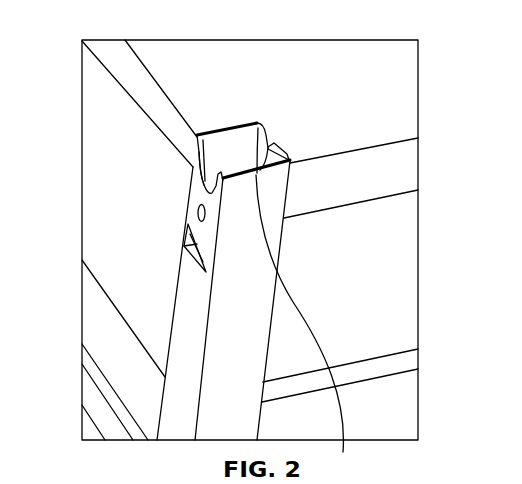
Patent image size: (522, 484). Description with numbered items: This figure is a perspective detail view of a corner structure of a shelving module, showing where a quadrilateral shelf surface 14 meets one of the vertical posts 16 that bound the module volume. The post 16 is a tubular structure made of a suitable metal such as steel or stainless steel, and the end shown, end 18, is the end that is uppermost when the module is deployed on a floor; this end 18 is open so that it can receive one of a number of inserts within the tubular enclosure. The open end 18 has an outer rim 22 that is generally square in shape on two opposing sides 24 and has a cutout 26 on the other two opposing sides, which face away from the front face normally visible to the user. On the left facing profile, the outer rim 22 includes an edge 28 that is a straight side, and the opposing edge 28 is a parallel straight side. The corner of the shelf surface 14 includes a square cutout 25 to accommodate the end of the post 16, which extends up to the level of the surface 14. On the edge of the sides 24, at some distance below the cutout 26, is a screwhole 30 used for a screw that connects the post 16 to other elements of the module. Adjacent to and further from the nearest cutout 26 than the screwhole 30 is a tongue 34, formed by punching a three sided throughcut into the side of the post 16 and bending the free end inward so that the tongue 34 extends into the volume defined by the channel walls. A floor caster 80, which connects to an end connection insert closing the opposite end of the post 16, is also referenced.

The shelf surface 14 is at (307, 89).
The vertical post 16 is at (223, 374).
The open end 18 is at (232, 160).
The outer rim 22 is at (217, 133).
The sides 24 is at (195, 164).
The square cutout 25 is at (268, 144).
The cutout 26 is at (196, 178).
The edge 28 is at (215, 133).
The screwhole 30 is at (198, 210).
The tongue 34 is at (185, 243).
The floor caster 80 is at (78, 0).